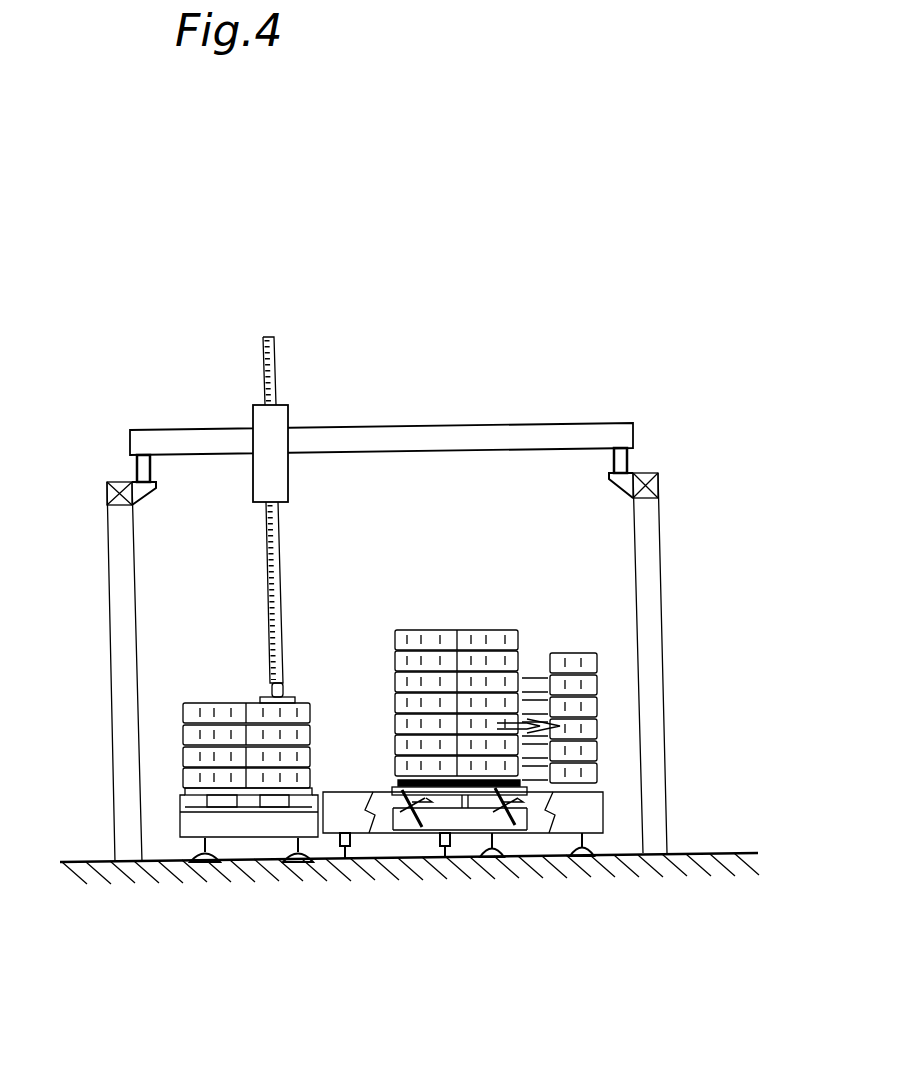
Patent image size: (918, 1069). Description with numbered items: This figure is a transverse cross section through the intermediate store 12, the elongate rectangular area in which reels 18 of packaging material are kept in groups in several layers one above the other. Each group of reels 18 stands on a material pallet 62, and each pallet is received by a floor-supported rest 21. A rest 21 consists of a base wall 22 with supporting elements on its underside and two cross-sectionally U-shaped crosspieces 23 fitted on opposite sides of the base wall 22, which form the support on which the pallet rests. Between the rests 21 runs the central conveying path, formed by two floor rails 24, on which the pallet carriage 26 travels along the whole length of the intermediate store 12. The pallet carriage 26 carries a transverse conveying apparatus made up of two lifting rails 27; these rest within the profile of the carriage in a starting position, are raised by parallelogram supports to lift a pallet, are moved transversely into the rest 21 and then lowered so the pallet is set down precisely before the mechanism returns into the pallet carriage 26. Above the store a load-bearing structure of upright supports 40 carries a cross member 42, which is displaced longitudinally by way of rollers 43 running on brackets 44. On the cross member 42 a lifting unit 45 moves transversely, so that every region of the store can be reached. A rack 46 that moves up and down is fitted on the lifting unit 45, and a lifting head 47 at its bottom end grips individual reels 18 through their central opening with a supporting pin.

The intermediate store 12 is at (594, 392).
The reel 18 is at (195, 733).
The rest 21 is at (270, 830).
The base wall 22 is at (240, 838).
The crosspiece 23 is at (180, 805).
The rail 24 is at (340, 850).
The pallet carriage 26 is at (390, 840).
The lifting rail 27 is at (475, 835).
The support 40 is at (115, 620).
The cross member 42 is at (430, 425).
The roller 43 is at (137, 472).
The bracket 44 is at (142, 497).
The lifting unit 45 is at (275, 418).
The rack 46 is at (280, 590).
The lifting head 47 is at (262, 697).
The material pallet 62 is at (176, 770).